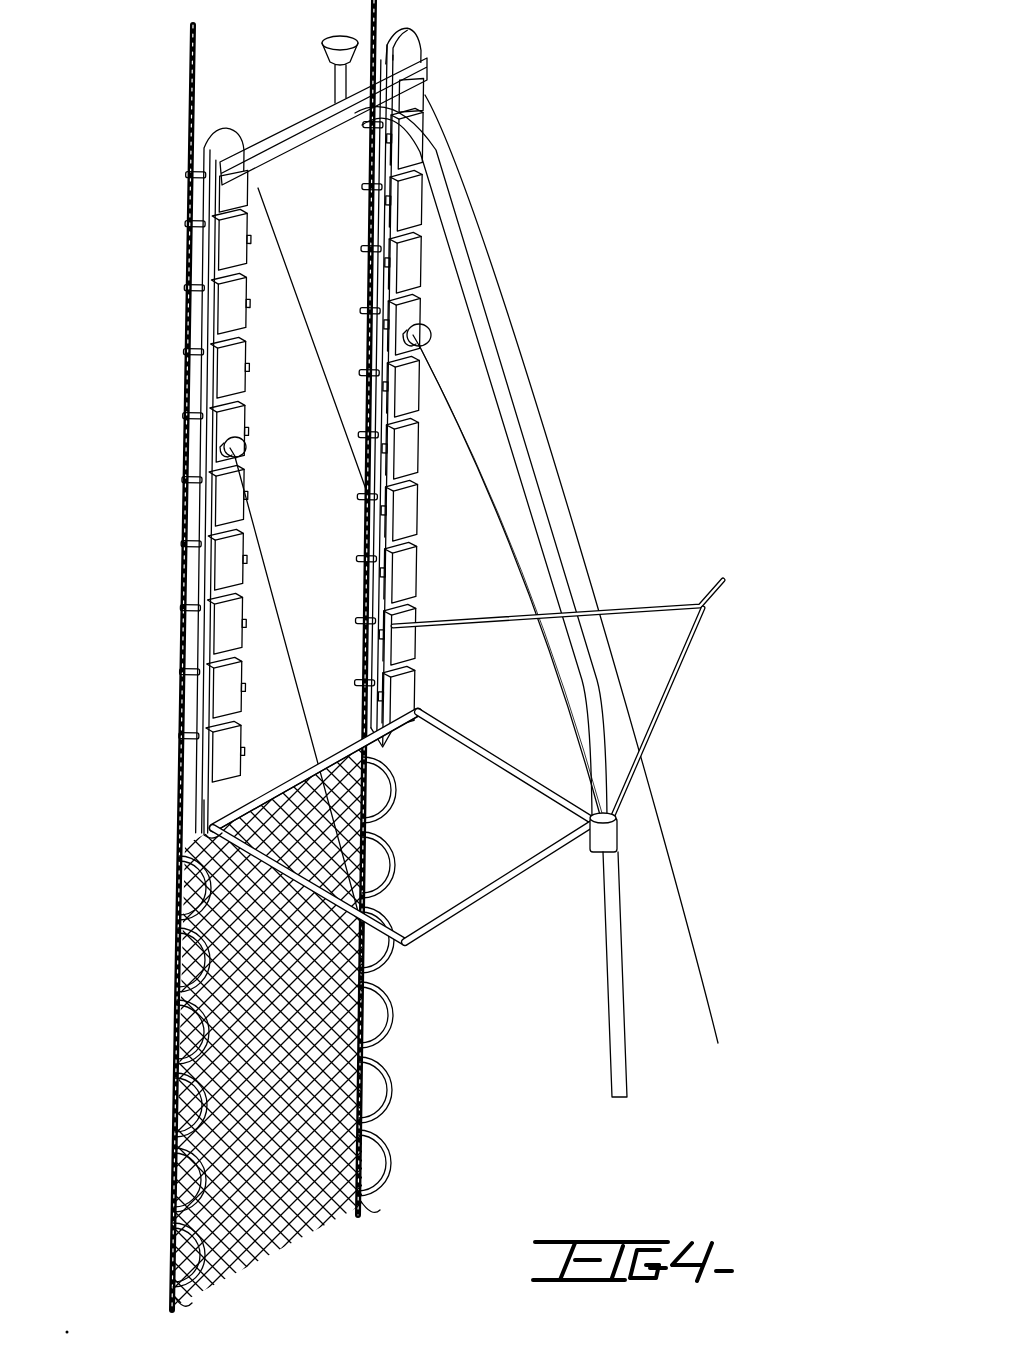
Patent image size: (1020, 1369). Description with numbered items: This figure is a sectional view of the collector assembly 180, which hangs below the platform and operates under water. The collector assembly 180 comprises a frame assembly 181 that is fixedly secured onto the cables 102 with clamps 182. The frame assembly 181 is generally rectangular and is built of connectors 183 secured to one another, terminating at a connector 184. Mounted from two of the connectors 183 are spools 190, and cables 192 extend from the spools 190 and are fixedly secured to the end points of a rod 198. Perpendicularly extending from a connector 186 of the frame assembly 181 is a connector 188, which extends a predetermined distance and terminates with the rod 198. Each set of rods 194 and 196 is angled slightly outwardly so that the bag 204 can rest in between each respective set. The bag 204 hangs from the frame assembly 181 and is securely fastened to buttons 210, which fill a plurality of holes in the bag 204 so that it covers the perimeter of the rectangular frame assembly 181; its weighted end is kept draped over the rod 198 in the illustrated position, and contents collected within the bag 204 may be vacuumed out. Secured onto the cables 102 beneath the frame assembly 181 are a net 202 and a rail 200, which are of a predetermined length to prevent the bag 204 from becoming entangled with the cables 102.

The cables 102 is at (190, 325).
The collector assembly 180 is at (132, 214).
The frame assembly 181 is at (153, 562).
The clamps 182 is at (368, 135).
The connectors 183 is at (415, 200).
The connector 184 is at (285, 135).
The connector 186 is at (345, 733).
The connector 188 is at (530, 780).
The spools 190 is at (425, 335).
The cables 192 is at (480, 470).
The rods 194 is at (637, 610).
The rods 196 is at (680, 683).
The rod 198 is at (543, 862).
The rail 200 is at (207, 899).
The net 202 is at (278, 1228).
The bag 204 is at (705, 960).
The buttons 210 is at (420, 270).